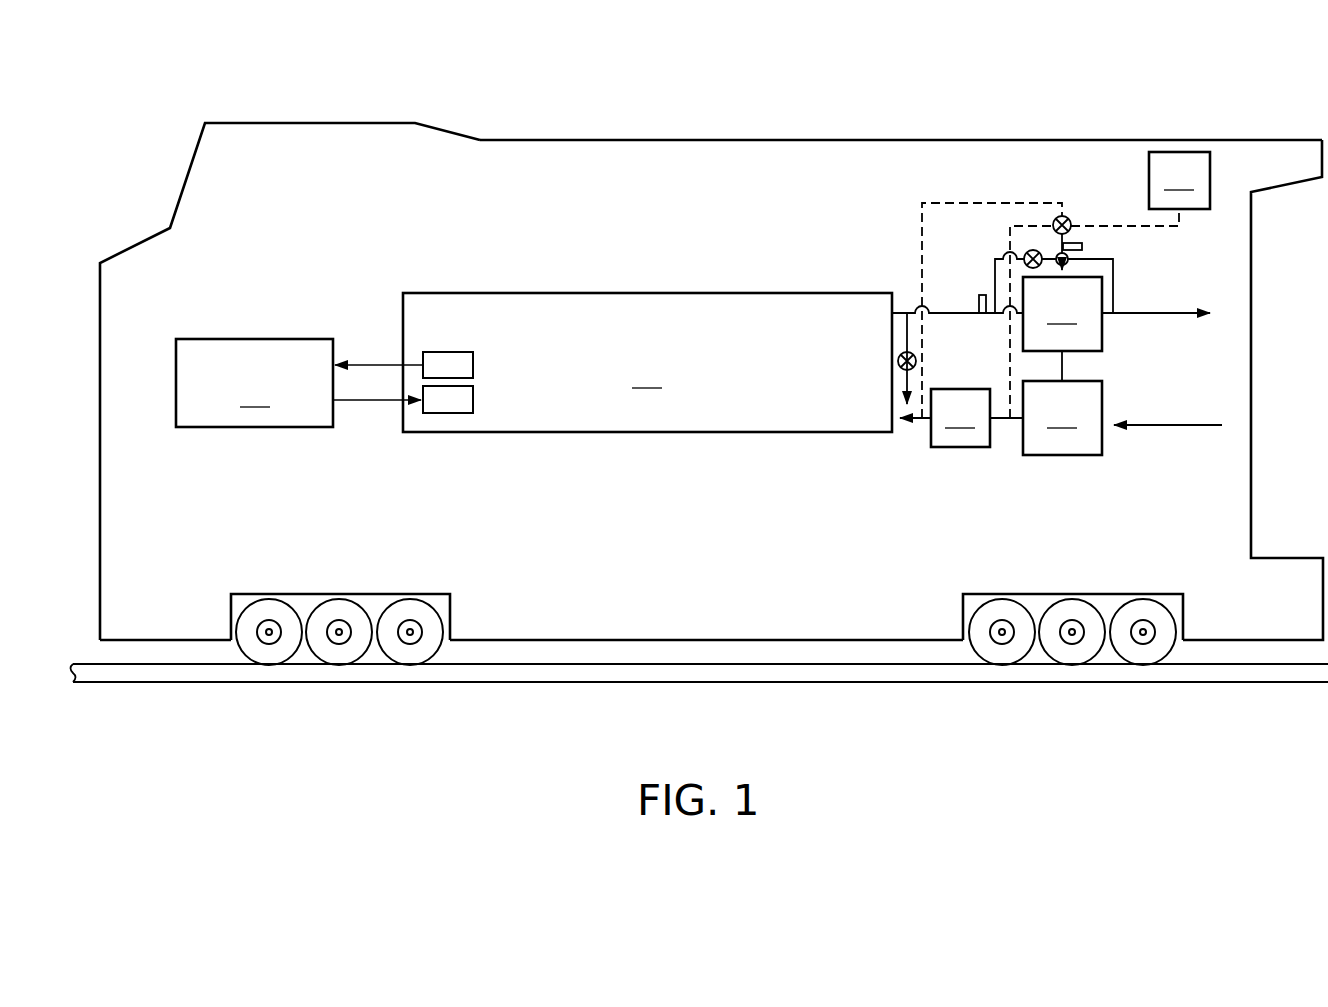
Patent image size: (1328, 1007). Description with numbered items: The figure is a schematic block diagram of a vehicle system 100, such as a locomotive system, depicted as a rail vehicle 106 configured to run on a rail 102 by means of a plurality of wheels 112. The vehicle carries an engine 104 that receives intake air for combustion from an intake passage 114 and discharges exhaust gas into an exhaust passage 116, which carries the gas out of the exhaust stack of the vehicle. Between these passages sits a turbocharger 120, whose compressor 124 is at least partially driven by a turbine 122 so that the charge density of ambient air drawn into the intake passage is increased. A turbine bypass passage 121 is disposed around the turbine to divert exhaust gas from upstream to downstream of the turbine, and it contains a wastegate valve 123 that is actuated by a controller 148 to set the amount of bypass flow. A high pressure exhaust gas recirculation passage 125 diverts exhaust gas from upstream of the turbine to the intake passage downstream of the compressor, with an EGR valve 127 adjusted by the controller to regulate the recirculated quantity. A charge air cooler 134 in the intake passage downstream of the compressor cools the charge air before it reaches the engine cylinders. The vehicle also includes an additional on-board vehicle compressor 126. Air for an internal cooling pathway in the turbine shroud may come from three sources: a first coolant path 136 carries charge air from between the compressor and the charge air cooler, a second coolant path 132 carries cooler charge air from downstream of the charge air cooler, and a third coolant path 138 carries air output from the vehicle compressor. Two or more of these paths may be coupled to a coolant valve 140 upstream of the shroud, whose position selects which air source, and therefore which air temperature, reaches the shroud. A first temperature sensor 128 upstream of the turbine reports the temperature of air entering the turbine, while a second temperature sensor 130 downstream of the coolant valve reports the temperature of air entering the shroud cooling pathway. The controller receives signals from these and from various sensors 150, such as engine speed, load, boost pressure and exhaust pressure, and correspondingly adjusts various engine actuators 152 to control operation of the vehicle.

The vehicle system 100 is at (1156, 78).
The rail 102 is at (1252, 683).
The engine 104 is at (647, 362).
The vehicle 106 is at (1002, 140).
The wheels 112 is at (437, 623).
The intake passage 114 is at (1178, 427).
The exhaust passage 116 is at (1160, 315).
The turbocharger 120 is at (1079, 403).
The turbine bypass passage 121 is at (993, 275).
The turbine 122 is at (1062, 314).
The wastegate valve 123 is at (1028, 252).
The compressor 124 is at (1062, 418).
The high pressure exhaust gas recirculation passage 125 is at (905, 335).
The vehicle compressor 126 is at (1179, 180).
The EGR valve 127 is at (898, 356).
The first temperature sensor 128 is at (980, 296).
The second temperature sensor 130 is at (1085, 246).
The second coolant path 132 is at (978, 203).
The charge air cooler 134 is at (961, 418).
The first coolant path 136 is at (1008, 376).
The third coolant path 138 is at (1140, 225).
The coolant valve 140 is at (1062, 216).
The controller 148 is at (254, 383).
The sensors 150 is at (404, 365).
The engine actuators 152 is at (403, 399).